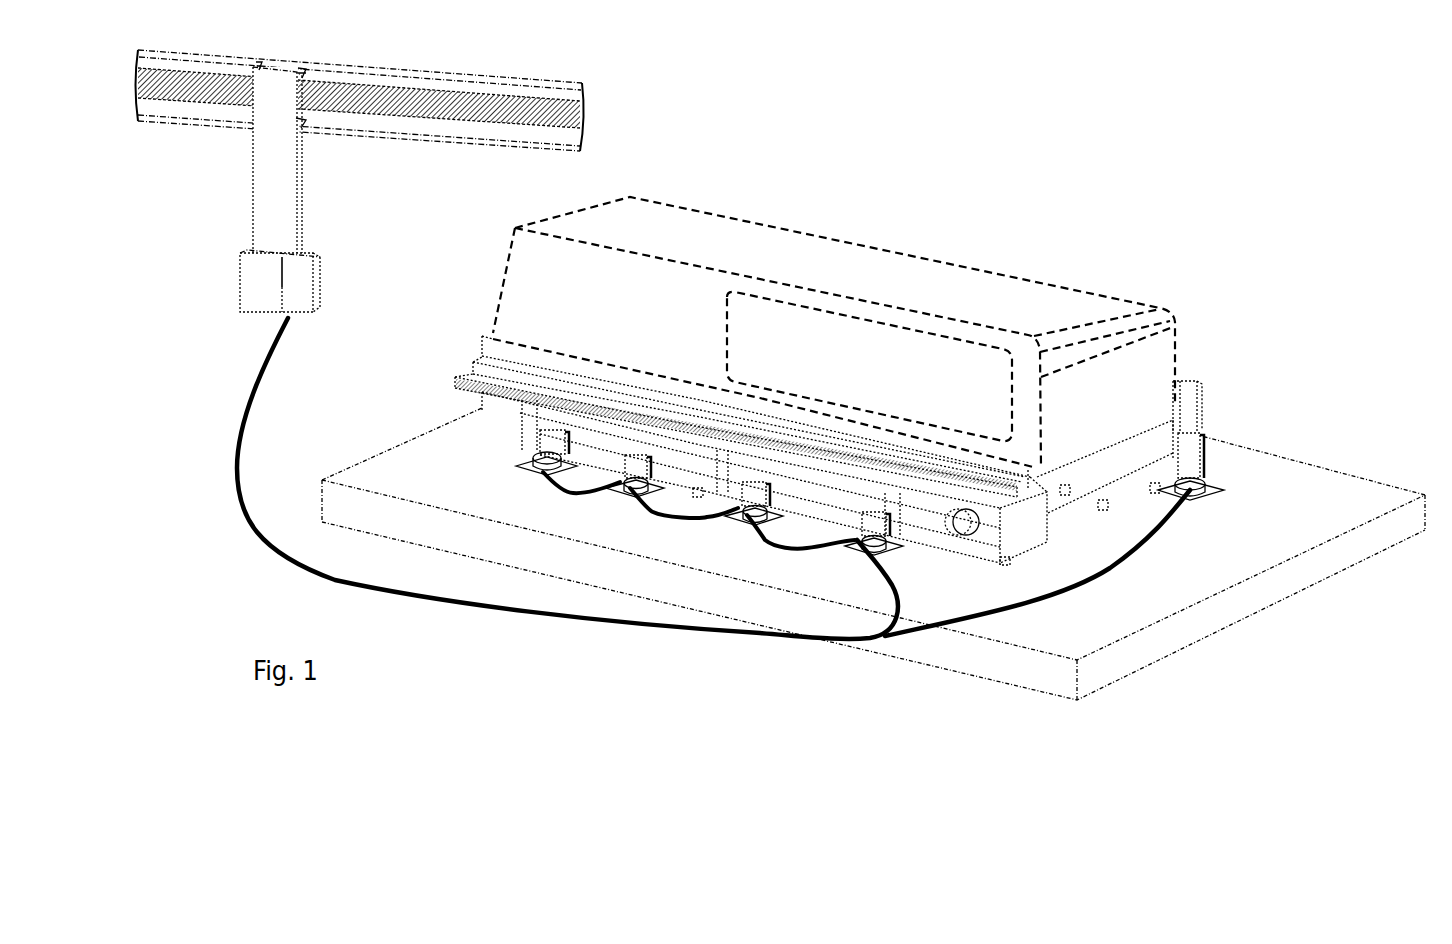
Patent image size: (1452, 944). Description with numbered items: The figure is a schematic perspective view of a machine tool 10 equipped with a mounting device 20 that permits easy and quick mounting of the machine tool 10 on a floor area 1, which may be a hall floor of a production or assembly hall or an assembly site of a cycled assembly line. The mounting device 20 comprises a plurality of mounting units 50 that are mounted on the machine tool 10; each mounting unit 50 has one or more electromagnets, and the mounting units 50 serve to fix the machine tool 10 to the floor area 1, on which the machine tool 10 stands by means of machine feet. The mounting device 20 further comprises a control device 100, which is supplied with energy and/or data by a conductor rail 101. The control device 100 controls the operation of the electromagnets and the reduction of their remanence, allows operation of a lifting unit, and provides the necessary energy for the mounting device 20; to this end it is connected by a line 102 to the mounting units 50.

The floor area 1 is at (1137, 657).
The machine tool 10 is at (1032, 242).
The mounting device 20 is at (796, 466).
The mounting units 50 is at (858, 540).
The control device 100 is at (253, 320).
The conductor rail 101 is at (592, 104).
The line 102 is at (665, 632).